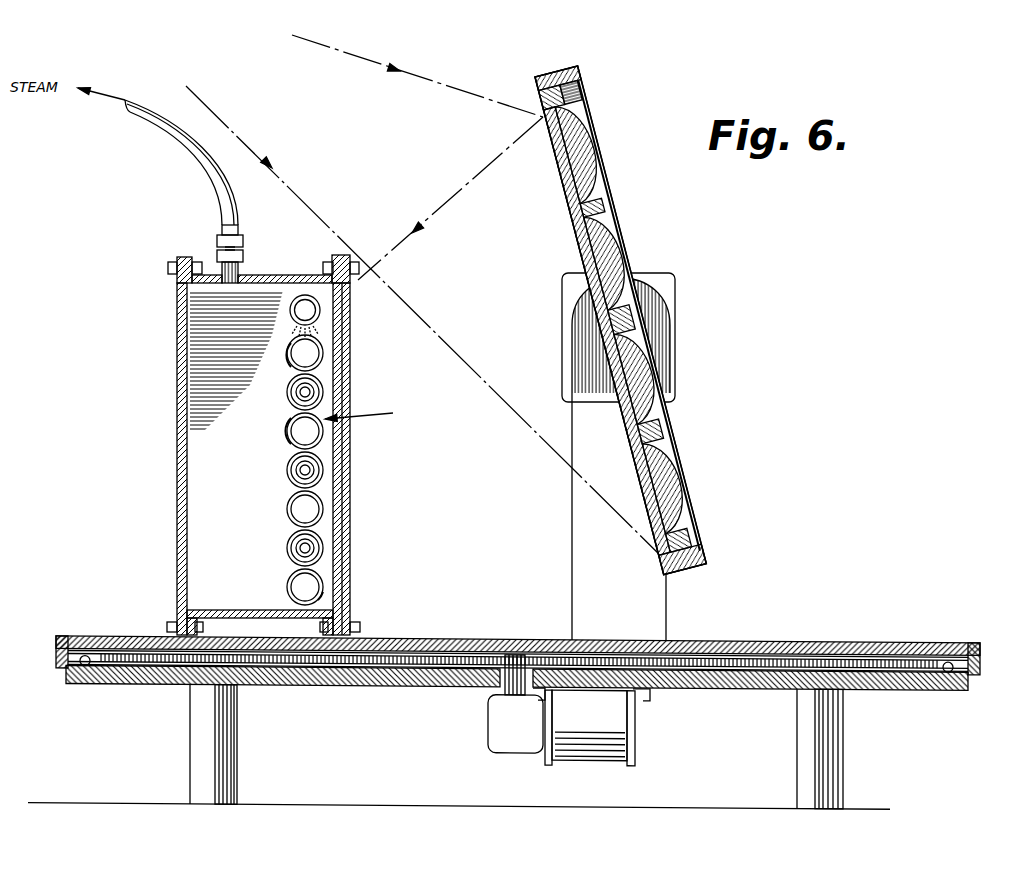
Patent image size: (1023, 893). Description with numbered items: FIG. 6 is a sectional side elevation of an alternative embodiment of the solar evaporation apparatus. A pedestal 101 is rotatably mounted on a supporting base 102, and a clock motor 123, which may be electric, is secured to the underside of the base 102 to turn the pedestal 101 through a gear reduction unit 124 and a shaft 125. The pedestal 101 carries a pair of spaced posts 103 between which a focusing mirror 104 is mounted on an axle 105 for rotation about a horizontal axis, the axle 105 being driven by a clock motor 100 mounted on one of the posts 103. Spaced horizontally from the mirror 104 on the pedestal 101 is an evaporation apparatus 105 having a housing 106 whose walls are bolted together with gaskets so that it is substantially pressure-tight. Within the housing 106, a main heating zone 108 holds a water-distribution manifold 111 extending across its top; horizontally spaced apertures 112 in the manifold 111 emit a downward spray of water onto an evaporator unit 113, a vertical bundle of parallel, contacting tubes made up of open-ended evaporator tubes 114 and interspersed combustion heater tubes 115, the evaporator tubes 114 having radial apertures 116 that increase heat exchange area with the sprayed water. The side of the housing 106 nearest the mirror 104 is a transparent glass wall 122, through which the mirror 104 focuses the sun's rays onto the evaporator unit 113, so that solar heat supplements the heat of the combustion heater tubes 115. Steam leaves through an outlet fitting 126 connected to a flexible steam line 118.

The clock motor 100 is at (675, 280).
The pedestal 101 is at (812, 636).
The supporting base 102 is at (745, 690).
The spaced posts 103 is at (660, 603).
The focusing mirror 104 is at (607, 212).
The axle 105 is at (166, 403).
The housing 106 is at (177, 318).
The main heating zone 108 is at (210, 500).
The water-distribution manifold 111 is at (320, 309).
The apertures 112 is at (290, 323).
The evaporator unit 113 is at (374, 412).
The evaporator tubes 114 is at (324, 354).
The combustion heater tubes 115 is at (324, 393).
The radial apertures 116 is at (291, 367).
The flexible steam line 118 is at (182, 136).
The transparent glass wall 122 is at (352, 380).
The clock motor 123 is at (590, 746).
The gear reduction unit 124 is at (492, 730).
The shaft 125 is at (503, 693).
The outlet fitting 126 is at (215, 257).